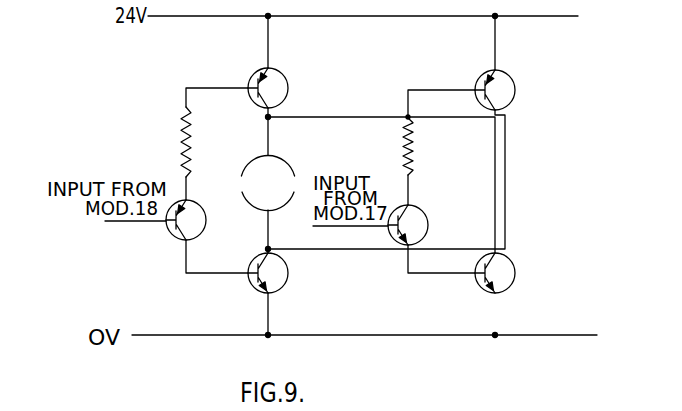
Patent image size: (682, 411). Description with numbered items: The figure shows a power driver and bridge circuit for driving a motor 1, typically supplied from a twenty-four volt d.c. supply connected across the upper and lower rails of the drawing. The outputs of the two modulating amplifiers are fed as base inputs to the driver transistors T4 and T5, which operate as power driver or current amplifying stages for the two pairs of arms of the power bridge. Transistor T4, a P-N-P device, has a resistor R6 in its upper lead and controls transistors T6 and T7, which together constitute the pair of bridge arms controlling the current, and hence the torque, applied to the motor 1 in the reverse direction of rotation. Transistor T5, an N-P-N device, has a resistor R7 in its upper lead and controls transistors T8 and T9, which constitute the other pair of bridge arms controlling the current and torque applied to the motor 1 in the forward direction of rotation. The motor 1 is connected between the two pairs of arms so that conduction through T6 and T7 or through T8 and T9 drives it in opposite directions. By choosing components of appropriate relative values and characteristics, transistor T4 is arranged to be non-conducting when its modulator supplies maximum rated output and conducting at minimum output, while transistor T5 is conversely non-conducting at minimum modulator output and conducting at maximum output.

The motor 1 is at (290, 168).
The transistor T4 is at (179, 233).
The transistor T5 is at (419, 223).
The transistor T6 is at (256, 79).
The transistor T7 is at (279, 276).
The transistor T8 is at (504, 81).
The transistor T9 is at (507, 273).
The resistor R6 is at (170, 142).
The resistor R7 is at (396, 146).